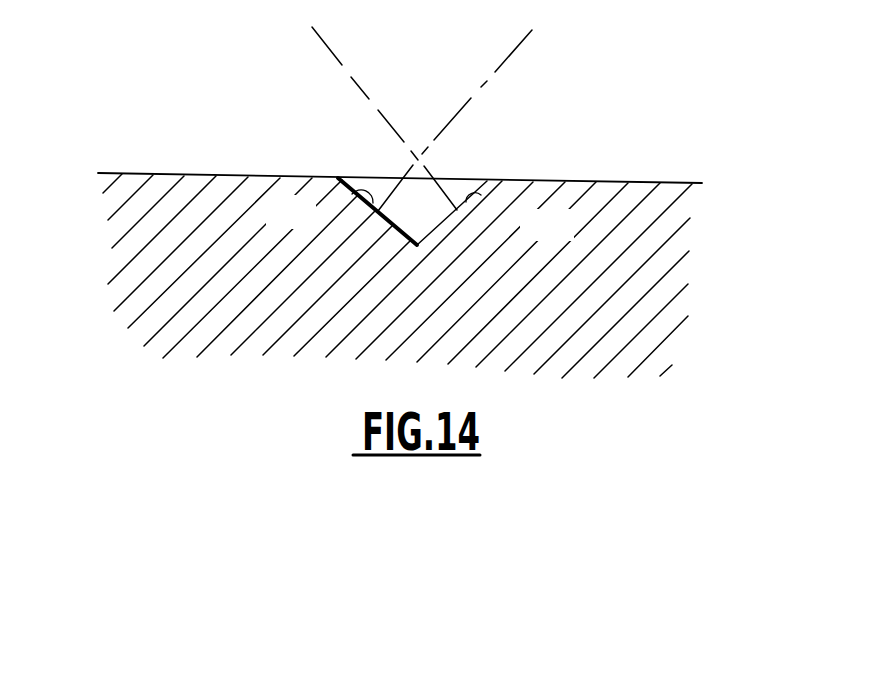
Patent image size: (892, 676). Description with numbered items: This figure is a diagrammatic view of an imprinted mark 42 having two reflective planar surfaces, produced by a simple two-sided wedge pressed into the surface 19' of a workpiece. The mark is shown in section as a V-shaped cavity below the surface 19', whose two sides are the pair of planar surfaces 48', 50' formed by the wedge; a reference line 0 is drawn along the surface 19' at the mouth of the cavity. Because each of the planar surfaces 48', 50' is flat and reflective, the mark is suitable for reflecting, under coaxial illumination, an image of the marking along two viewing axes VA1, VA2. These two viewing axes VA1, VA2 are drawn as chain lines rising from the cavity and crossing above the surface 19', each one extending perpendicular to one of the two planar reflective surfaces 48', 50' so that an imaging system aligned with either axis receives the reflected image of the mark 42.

The groove 42 is at (372, 166).
The planar surface 48' is at (321, 211).
The planar surface 50' is at (518, 219).
The surface reference plane 0 is at (566, 181).
The surface 19' is at (429, 252).
The viewing axis VA1 is at (470, 105).
The viewing axis VA2 is at (337, 53).